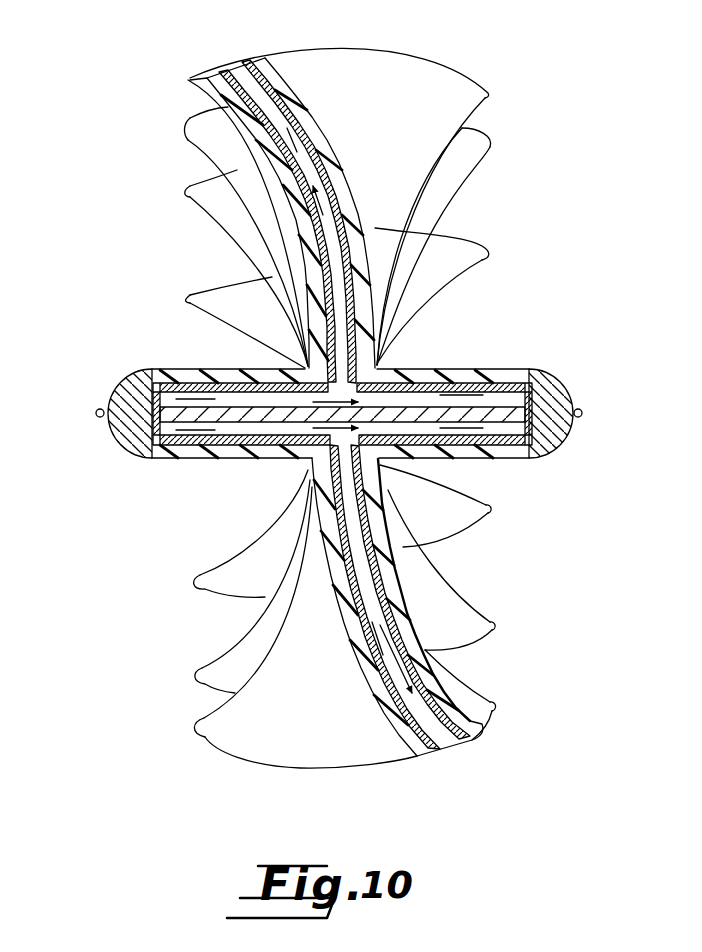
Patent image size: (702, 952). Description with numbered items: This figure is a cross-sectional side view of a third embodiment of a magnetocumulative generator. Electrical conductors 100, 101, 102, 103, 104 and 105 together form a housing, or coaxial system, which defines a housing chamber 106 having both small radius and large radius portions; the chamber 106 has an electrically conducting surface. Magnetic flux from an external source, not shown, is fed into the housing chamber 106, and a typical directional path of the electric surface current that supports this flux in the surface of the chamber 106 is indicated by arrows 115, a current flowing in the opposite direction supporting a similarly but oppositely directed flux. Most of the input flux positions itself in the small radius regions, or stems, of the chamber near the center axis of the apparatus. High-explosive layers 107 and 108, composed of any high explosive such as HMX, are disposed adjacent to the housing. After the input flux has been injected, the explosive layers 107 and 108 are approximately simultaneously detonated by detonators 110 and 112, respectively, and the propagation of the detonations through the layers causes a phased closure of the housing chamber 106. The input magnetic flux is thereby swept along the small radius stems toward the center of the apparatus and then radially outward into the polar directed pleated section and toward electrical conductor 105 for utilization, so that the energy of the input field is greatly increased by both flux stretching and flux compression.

The electrical conductor 100 is at (487, 403).
The electrical conductor 101 is at (533, 398).
The electrical conductor 102 is at (147, 422).
The electrical conductor 103 is at (427, 370).
The electrical conductor 104 is at (223, 372).
The electrical conductor 105 is at (220, 72).
The housing chamber 106 is at (327, 242).
The high-explosive layer 107 is at (282, 80).
The high-explosive layer 108 is at (204, 96).
The detonator 110 is at (582, 414).
The detonator 112 is at (98, 411).
The arrows 115 is at (483, 430).